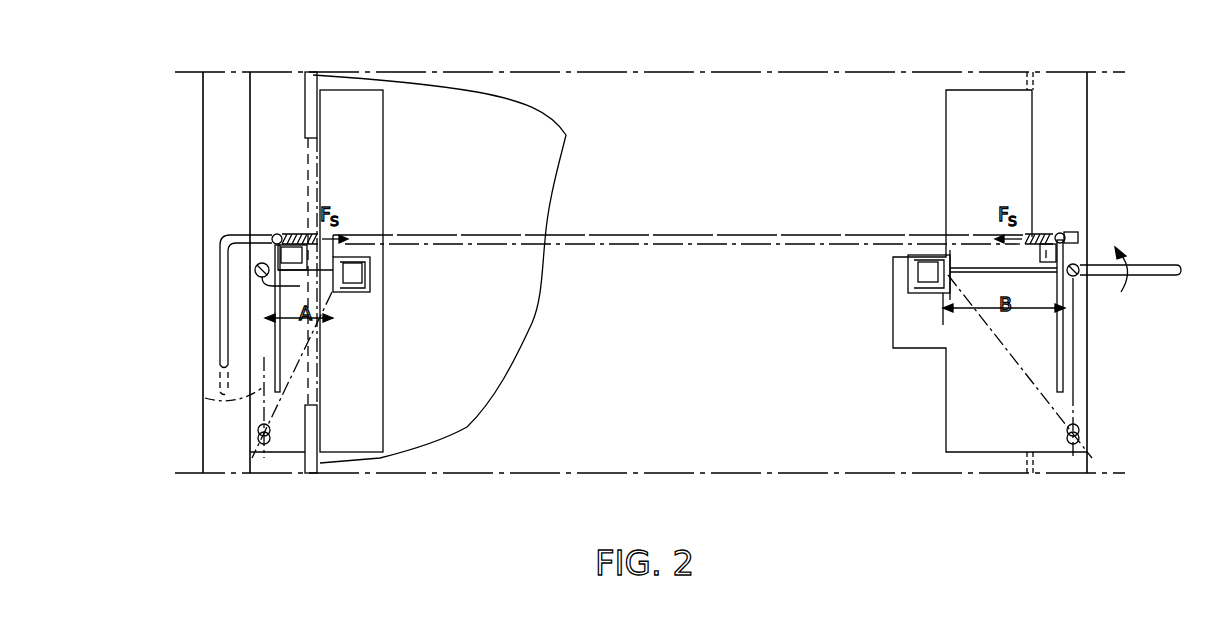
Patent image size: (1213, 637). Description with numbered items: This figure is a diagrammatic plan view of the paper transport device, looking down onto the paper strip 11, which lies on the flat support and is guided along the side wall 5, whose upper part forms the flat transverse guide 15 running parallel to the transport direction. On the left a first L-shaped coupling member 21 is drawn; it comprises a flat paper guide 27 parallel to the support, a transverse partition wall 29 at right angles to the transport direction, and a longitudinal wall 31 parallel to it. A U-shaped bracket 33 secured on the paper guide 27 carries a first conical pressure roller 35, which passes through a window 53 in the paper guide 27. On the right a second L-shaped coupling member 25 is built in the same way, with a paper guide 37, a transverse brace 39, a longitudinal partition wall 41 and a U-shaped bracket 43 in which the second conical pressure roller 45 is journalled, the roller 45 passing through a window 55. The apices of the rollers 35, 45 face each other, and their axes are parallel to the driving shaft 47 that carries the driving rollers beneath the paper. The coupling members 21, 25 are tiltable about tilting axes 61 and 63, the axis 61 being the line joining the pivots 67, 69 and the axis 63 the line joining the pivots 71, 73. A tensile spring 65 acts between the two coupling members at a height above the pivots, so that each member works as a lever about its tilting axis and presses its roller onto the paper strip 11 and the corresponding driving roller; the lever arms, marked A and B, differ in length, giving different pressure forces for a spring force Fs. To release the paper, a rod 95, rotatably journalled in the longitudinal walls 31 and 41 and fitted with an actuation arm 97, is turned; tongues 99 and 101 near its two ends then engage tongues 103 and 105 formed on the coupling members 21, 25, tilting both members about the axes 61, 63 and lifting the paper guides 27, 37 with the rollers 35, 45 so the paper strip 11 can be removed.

The side wall 5 is at (287, 280).
The transverse guide 15 is at (305, 91).
The paper strip 11 is at (492, 93).
The first L-shaped coupling member 21 is at (224, 318).
The second L-shaped coupling member 25 is at (1065, 283).
The paper guide 27 is at (376, 162).
The transverse partition wall 29 is at (305, 272).
The longitudinal wall 31 is at (277, 345).
The U-shaped bracket 33 is at (355, 278).
The first conical pressure roller 35 is at (336, 284).
The paper guide 37 is at (953, 152).
The transverse brace 39 is at (1013, 273).
The longitudinal partition wall 41 is at (1064, 345).
The U-shaped bracket 43 is at (919, 280).
The second conical pressure roller 45 is at (937, 287).
The driving shaft 47 is at (1173, 278).
The window 53 is at (357, 258).
The window 55 is at (945, 276).
The tilting axis 61 is at (258, 392).
The tilting axis 63 is at (1078, 401).
The tensile spring 65 is at (560, 235).
The pivot 67 is at (260, 263).
The pivot 69 is at (257, 436).
The pivot 71 is at (1126, 266).
The pivot 73 is at (1082, 434).
The rod 95 is at (1067, 239).
The actuation arm 97 is at (228, 303).
The tongue 99 is at (290, 249).
The tongue 101 is at (1052, 257).
The tongue 103 is at (262, 286).
The tongue 105 is at (1078, 266).